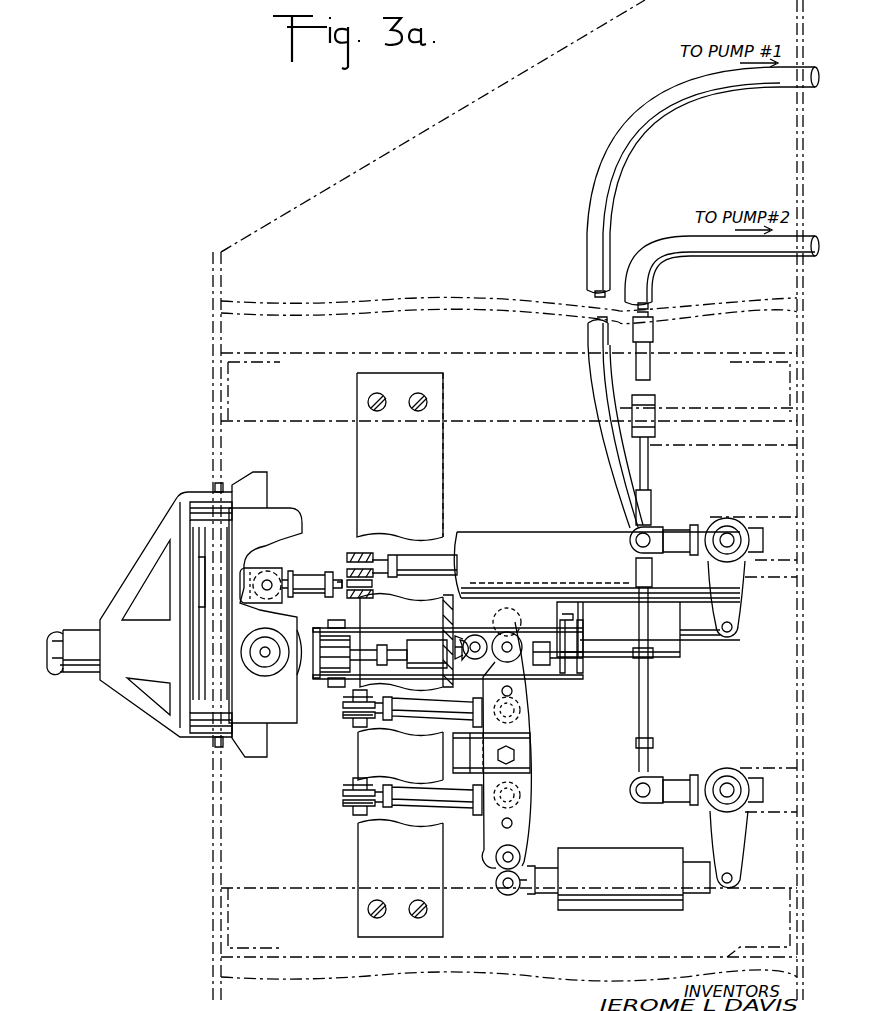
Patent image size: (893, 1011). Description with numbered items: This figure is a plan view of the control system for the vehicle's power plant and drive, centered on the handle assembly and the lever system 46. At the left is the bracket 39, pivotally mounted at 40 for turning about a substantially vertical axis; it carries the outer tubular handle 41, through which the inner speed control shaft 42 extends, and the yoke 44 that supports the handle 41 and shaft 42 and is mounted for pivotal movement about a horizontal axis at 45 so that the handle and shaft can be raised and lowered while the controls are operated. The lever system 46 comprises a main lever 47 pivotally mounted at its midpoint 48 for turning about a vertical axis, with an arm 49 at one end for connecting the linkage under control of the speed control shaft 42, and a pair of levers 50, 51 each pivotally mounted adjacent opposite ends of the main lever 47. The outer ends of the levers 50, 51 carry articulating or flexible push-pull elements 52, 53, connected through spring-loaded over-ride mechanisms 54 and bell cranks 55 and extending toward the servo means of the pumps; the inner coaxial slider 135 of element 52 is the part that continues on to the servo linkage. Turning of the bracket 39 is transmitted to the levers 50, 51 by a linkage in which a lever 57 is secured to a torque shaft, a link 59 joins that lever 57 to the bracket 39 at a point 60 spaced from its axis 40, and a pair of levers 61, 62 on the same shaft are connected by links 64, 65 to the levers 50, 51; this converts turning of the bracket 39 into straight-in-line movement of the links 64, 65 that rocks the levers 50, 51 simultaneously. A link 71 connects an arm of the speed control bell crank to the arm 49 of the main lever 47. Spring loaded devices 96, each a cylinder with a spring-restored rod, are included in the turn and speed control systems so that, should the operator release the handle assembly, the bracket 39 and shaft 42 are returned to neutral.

The bracket 39 is at (252, 750).
The pivot 40 is at (266, 658).
The outer tubular handle 41 is at (76, 668).
The inner shaft 42 is at (55, 638).
The yoke 44 is at (145, 728).
The horizontal pivot axis 45 is at (216, 750).
The lever system 46 is at (515, 741).
The main lever 47 is at (524, 815).
The midpoint pivot 48 is at (512, 753).
The arm 49 is at (487, 640).
The lever 50 is at (510, 620).
The lever 51 is at (505, 890).
The push-pull element 52 is at (630, 300).
The push-pull element 53 is at (598, 298).
The spring-loaded over-ride mechanism 54 is at (655, 895).
The bell crank 55 is at (728, 605).
The lever 57 is at (347, 598).
The link 59 is at (317, 575).
The connection point 60 is at (268, 584).
The lever 61 is at (345, 720).
The lever 62 is at (345, 808).
The link 64 is at (410, 710).
The link 65 is at (418, 800).
The link 71 is at (372, 650).
The spring loaded device 96 is at (528, 535).
The inner coaxial slider 135 is at (652, 318).